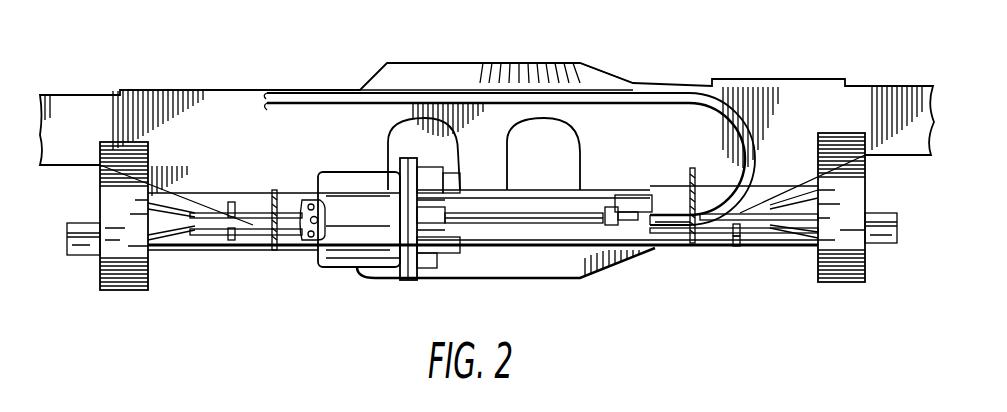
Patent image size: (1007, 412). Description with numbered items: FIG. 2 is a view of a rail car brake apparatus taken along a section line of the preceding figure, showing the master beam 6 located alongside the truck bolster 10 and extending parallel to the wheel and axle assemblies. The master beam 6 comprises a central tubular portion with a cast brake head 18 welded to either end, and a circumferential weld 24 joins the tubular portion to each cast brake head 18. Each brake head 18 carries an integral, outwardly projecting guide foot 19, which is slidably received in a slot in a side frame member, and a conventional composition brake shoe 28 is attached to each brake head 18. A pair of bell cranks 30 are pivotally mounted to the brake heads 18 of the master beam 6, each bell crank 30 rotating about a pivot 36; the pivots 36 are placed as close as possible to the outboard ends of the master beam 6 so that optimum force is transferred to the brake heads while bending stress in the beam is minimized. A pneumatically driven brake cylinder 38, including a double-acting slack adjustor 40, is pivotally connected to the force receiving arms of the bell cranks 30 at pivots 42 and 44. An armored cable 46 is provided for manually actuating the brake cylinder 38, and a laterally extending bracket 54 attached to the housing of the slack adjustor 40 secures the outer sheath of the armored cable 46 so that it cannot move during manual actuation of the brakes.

The truck bolster 10 is at (228, 135).
The master beam 6 is at (491, 188).
The guide feet 19 is at (75, 223).
The composition brake shoes 28 is at (148, 273).
The bell cranks 30 is at (210, 222).
The brake heads 18 is at (231, 248).
The pivot 36 is at (240, 199).
The circumferential weld 24 is at (276, 192).
The pivot 42 is at (279, 254).
The brake cylinder 38 is at (340, 215).
The double-acting slack adjustor 40 is at (548, 213).
The laterally extending bracket 54 is at (612, 206).
The pivot 44 is at (683, 250).
The armored cable 46 is at (758, 166).